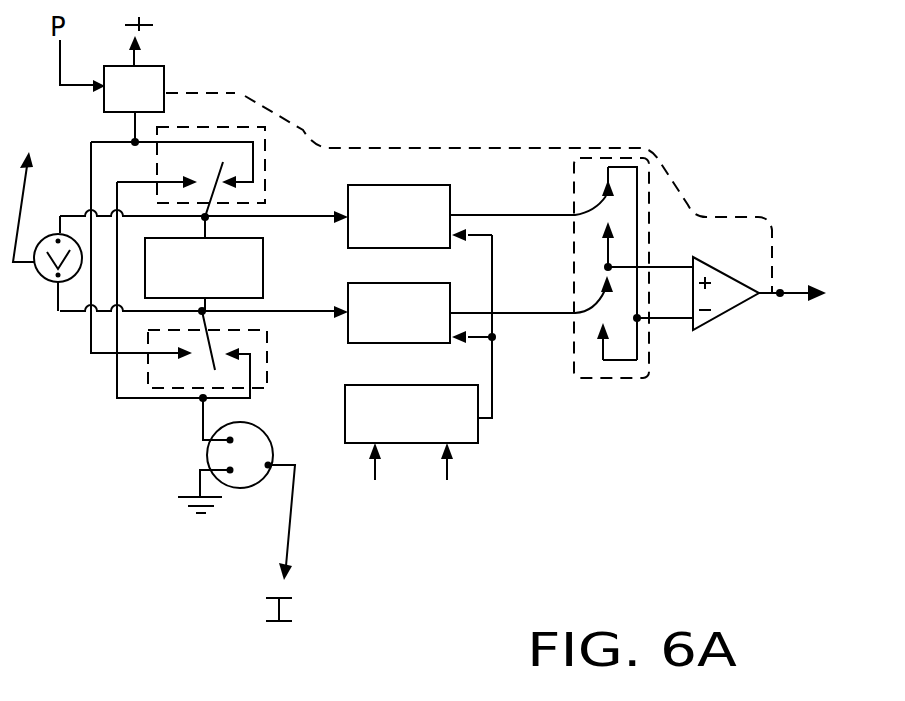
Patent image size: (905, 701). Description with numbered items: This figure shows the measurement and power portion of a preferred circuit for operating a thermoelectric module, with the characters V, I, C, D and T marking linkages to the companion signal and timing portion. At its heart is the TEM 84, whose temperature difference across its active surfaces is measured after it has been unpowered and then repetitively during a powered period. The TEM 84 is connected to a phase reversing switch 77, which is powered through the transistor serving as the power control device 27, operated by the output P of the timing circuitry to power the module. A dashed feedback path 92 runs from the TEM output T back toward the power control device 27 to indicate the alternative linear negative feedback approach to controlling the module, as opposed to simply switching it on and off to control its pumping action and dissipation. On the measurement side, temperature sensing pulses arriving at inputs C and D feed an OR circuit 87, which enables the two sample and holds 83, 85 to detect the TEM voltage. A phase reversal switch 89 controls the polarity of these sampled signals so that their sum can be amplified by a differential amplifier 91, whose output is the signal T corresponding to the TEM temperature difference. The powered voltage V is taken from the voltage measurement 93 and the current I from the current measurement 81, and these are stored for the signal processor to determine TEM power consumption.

The power control device 27 is at (165, 76).
The control circuit 92 is at (549, 146).
The phase reversing switch 77 is at (266, 178).
The sample and hold 83 is at (450, 198).
The TEM 84 is at (263, 266).
The sample and hold 85 is at (385, 345).
The OR circuit 87 is at (478, 427).
The phase reversal switch 89 is at (612, 382).
The differential amplifier 91 is at (730, 315).
The current measurement 81 is at (205, 456).
The voltage measurement 93 is at (42, 284).